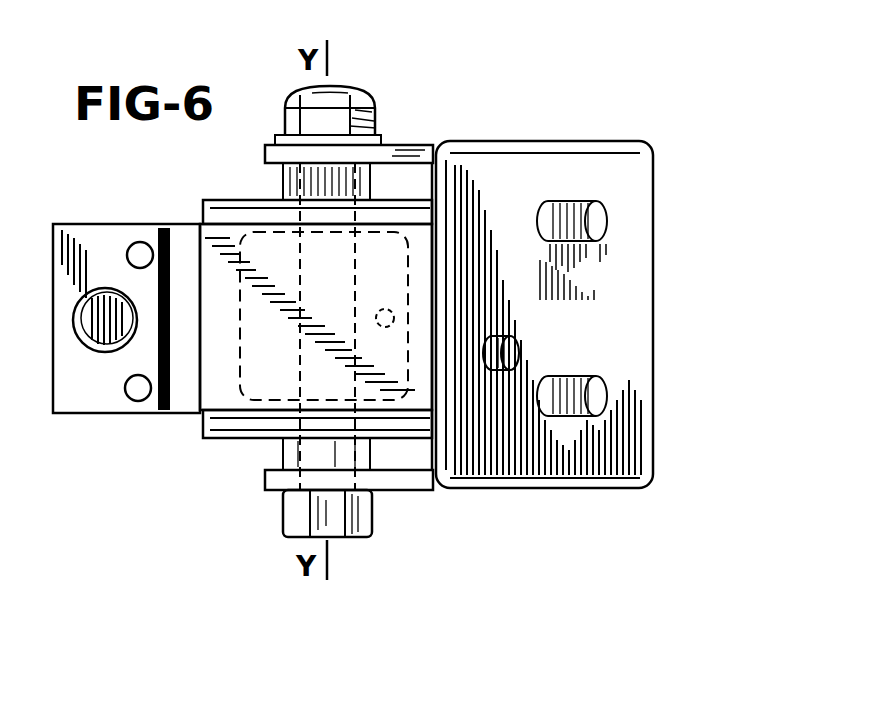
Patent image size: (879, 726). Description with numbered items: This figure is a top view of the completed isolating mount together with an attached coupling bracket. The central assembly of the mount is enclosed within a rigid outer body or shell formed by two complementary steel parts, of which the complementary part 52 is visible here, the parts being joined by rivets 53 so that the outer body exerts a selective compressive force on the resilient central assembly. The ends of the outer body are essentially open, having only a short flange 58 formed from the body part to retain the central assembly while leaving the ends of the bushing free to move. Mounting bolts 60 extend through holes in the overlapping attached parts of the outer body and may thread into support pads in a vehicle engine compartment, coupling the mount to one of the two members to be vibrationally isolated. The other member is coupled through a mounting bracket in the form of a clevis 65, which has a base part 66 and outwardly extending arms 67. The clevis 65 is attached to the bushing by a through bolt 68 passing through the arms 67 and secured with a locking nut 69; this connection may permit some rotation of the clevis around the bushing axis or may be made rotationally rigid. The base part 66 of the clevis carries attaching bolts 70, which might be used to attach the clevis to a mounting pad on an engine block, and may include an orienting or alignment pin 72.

The complementary part 52 is at (190, 403).
The rivets 53 is at (138, 244).
The flange 58 is at (245, 428).
The mounting bolts 60 is at (80, 325).
The clevis 65 is at (609, 314).
The base part 66 is at (660, 291).
The arms 67 is at (402, 154).
The through bolt 68 is at (284, 516).
The locking nut 69 is at (336, 95).
The attaching bolts 70 is at (602, 386).
The alignment pin 72 is at (516, 340).